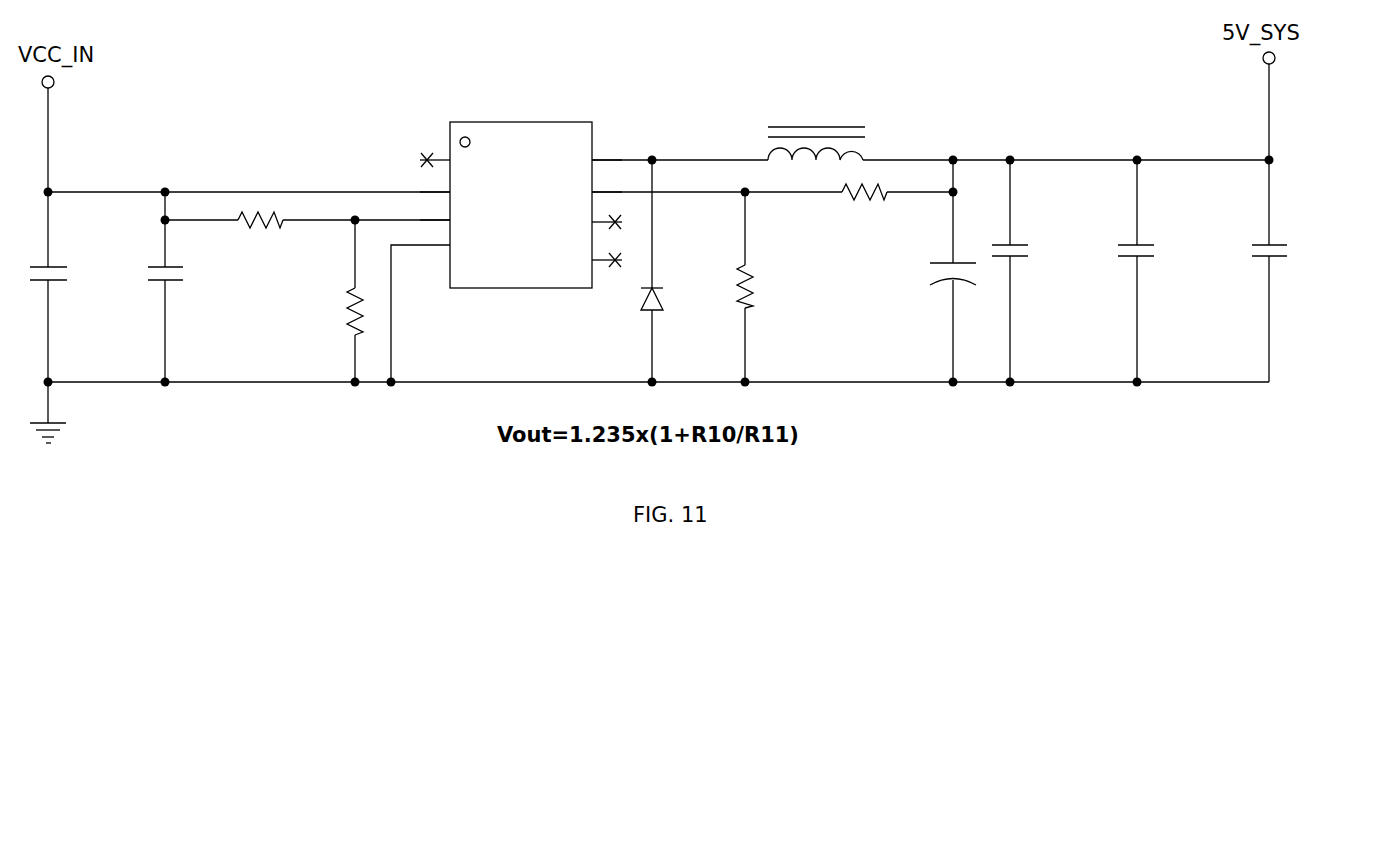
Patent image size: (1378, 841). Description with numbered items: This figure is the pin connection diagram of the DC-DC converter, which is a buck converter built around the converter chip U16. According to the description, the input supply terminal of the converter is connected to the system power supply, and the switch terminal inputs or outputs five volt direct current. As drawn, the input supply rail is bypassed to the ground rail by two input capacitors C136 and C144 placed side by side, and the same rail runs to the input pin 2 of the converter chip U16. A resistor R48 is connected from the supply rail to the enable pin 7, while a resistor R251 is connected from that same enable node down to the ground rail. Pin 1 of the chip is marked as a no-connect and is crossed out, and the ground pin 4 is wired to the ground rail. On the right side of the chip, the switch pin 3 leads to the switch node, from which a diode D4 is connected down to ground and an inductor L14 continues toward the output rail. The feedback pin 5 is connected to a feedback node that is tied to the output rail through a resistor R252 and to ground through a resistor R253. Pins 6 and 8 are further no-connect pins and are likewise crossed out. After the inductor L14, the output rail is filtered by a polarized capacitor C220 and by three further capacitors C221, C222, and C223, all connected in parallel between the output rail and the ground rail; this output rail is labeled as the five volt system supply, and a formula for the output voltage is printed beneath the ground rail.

The input capacitor 10uF/25V C136 is at (90, 289).
The input capacitor 10uF/25V C144 is at (209, 287).
The resistor 100K R48 is at (307, 213).
The resistor 100K R251 is at (399, 301).
The regulator IC TD1583 U16 is at (522, 122).
The pin 1 NC 1 is at (435, 151).
The pin 2 IN 2 is at (435, 180).
The pin 3 SW 3 is at (607, 147).
The pin 4 GND 4 is at (420, 301).
The pin 5 FB 5 is at (607, 180).
The pin 6 NC 6 is at (607, 213).
The pin 7 EN 7 is at (435, 209).
The pin 8 NC 8 is at (607, 251).
The diode SS34 D4 is at (681, 271).
The resistor 4.7K R253 is at (777, 287).
The inductor 10uH/CD75 L14 is at (812, 118).
The resistor 15K R252 is at (856, 185).
The capacitor 33uF/16V C220 is at (909, 271).
The capacitor 10uF/16V C221 is at (1052, 271).
The capacitor 10uF/16V C222 is at (1179, 271).
The capacitor 0.1uF/16V C223 is at (1315, 223).